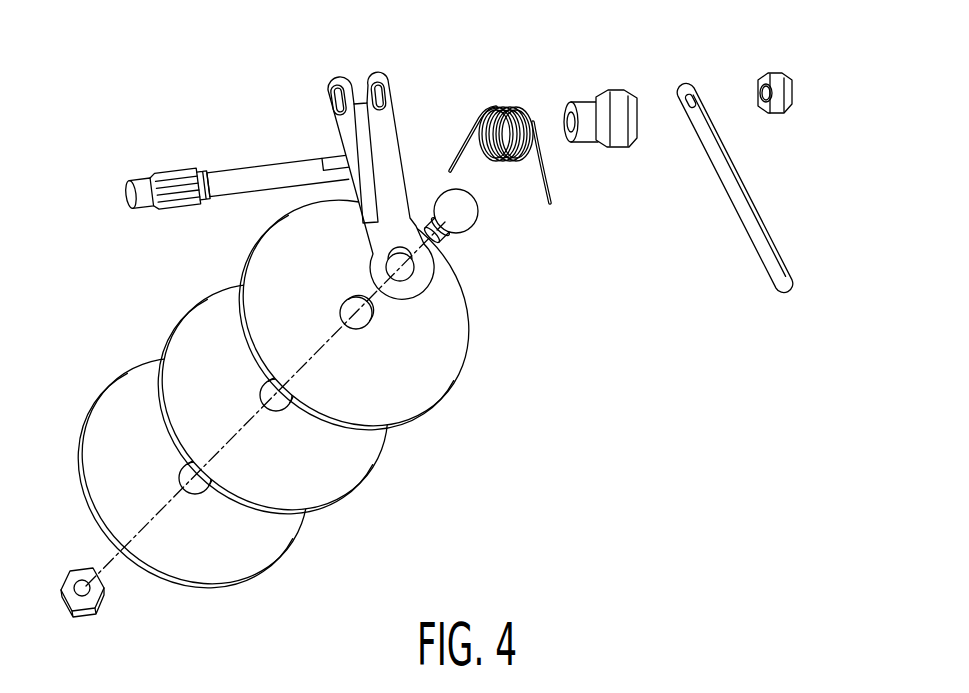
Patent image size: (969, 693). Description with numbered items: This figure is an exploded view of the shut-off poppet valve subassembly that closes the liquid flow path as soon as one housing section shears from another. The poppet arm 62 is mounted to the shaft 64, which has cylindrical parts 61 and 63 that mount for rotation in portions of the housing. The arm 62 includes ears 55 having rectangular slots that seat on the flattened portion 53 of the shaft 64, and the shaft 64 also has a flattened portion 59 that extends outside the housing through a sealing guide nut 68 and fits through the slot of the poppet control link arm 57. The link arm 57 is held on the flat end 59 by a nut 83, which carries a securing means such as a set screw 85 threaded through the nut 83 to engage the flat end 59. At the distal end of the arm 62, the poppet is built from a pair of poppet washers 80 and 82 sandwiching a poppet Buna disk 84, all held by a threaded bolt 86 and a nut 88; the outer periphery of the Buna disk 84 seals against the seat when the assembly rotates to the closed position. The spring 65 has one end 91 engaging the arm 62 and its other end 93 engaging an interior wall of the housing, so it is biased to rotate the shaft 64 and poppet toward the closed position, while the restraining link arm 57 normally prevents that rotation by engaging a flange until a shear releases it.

The flattened portion 53 is at (172, 178).
The ears 55 is at (333, 95).
The poppet control link arm 57 is at (752, 234).
The flattened portion 59 is at (336, 162).
The cylindrical part 61 is at (131, 190).
The poppet arm 62 is at (378, 151).
The cylindrical part 63 is at (268, 170).
The shaft 64 is at (192, 170).
The spring 65 is at (526, 125).
The sealing guide nut 68 is at (600, 98).
The poppet washer 80 is at (416, 388).
The poppet washer 82 is at (258, 560).
The nut 83 is at (771, 74).
The poppet Buna disk 84 is at (333, 478).
The set screw 85 is at (793, 100).
The threaded bolt 86 is at (466, 218).
The nut 88 is at (100, 601).
The spring end 91 is at (553, 190).
The spring end 93 is at (464, 142).